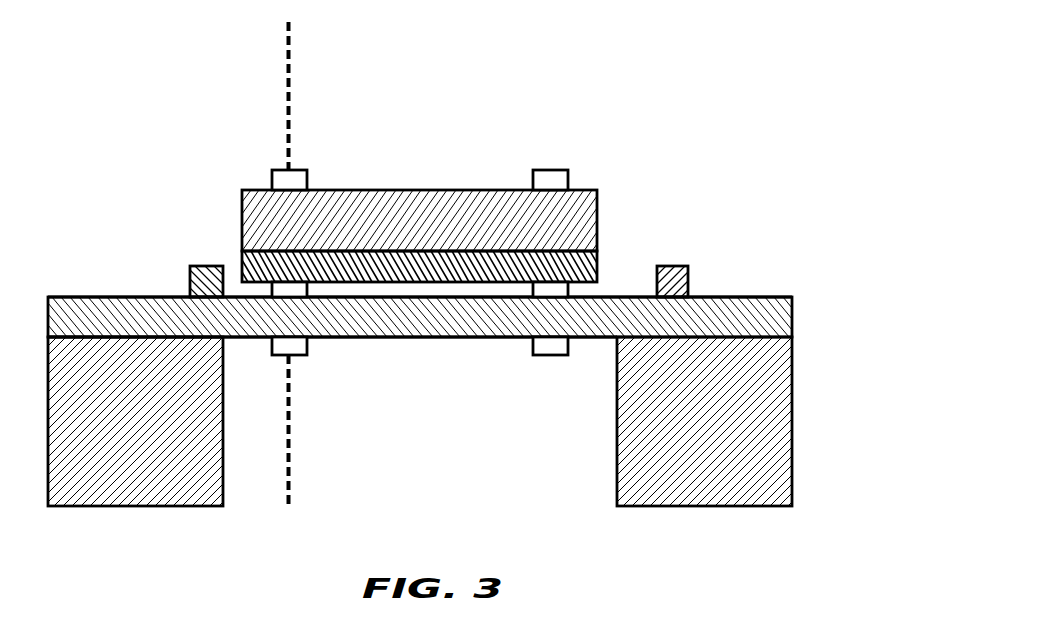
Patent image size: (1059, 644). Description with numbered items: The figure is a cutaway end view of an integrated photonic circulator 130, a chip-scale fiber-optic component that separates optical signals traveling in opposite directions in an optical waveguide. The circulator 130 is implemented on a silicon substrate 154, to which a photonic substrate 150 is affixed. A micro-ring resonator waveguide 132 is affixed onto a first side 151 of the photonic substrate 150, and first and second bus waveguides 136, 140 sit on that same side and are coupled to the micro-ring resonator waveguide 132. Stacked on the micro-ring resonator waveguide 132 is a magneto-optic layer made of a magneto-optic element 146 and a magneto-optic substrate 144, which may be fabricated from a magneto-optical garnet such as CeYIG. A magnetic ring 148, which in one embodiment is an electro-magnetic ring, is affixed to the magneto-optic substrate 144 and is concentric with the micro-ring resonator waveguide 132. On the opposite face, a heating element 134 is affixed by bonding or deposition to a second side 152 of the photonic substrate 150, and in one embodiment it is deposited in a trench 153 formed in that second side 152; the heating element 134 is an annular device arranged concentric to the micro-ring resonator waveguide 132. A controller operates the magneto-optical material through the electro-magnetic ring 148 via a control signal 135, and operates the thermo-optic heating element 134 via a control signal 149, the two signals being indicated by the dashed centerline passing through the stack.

The integrated photonic circulator 130 is at (176, 112).
The micro-ring resonator waveguide 132 is at (572, 289).
The heating element 134 is at (306, 365).
The control signal 135 is at (292, 433).
The first bus waveguide 136 is at (690, 283).
The second bus waveguide 140 is at (203, 266).
The magneto-optic substrate 144 is at (598, 218).
The magneto-optic element 146 is at (598, 265).
The magnetic ring 148 is at (288, 182).
The control signal 149 is at (290, 98).
The photonic substrate 150 is at (777, 318).
The first side of the photonic substrate 151 is at (118, 297).
The second side of the photonic substrate 152 is at (232, 338).
The trench 153 is at (293, 315).
The silicon substrate 154 is at (778, 392).